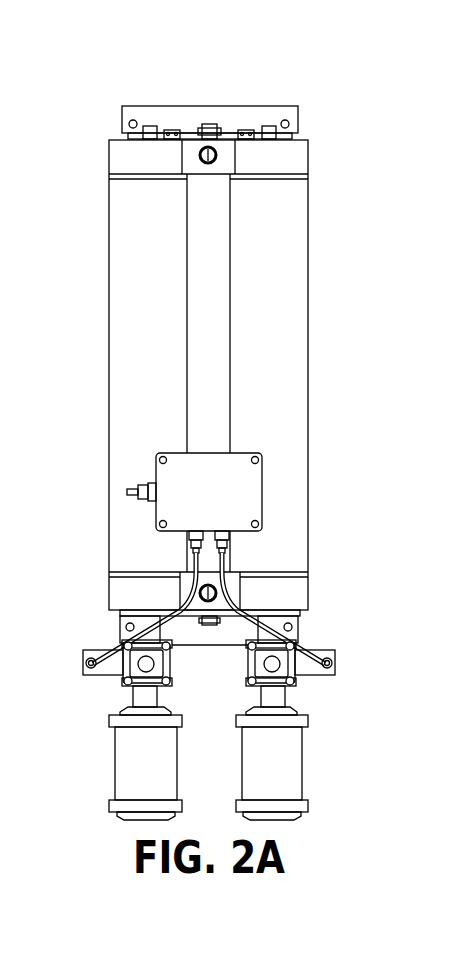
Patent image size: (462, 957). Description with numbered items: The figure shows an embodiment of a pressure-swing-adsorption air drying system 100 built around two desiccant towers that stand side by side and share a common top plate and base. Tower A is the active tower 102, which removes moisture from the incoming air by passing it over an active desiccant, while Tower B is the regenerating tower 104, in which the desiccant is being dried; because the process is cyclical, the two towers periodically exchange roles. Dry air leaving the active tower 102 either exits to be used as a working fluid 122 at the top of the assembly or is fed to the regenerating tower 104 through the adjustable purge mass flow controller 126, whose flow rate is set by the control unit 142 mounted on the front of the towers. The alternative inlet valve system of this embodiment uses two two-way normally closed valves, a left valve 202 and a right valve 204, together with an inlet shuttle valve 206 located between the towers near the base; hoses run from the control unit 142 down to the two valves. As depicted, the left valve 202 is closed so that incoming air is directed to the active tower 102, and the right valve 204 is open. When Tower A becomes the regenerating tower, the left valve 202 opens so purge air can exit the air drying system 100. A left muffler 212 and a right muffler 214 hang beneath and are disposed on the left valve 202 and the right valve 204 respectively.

The air drying system 100 is at (78, 86).
The active tower 102 is at (110, 278).
The regenerating tower 104 is at (307, 278).
The working fluid 122 is at (212, 145).
The adjustable purge mass flow controller 126 is at (231, 149).
The control unit 142 is at (247, 517).
The left valve 202 is at (68, 665).
The right valve 204 is at (350, 665).
The inlet shuttle valve 206 is at (220, 592).
The left muffler 212 is at (84, 763).
The right muffler 214 is at (336, 763).